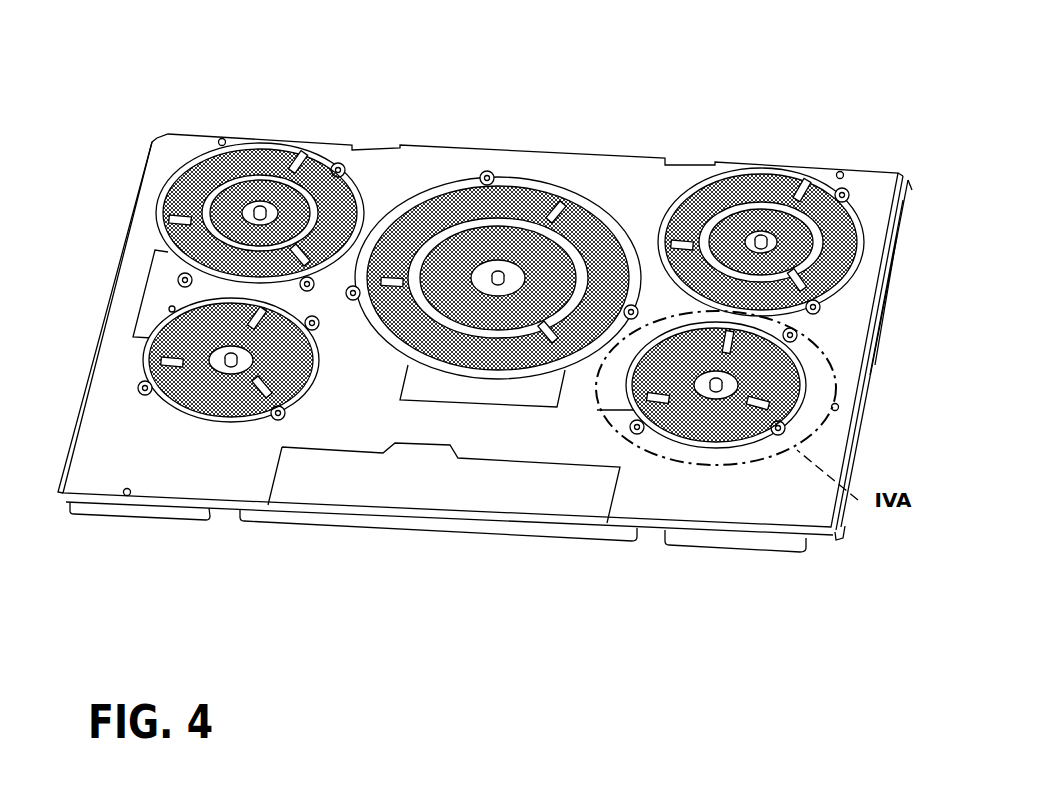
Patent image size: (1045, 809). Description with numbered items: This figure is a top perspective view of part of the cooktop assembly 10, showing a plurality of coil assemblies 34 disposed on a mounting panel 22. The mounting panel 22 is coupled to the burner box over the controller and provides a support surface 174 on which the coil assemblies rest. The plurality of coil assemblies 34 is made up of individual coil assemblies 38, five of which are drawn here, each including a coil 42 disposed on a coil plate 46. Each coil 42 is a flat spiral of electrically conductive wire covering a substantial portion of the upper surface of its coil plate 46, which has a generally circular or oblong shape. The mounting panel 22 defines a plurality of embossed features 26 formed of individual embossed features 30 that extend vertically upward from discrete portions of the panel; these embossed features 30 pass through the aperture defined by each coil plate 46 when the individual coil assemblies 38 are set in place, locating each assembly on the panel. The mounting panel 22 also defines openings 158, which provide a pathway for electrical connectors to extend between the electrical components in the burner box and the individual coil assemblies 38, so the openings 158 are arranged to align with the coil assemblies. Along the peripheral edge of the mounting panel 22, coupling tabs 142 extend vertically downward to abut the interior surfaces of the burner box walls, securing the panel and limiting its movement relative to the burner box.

The cooktop assembly 10 is at (491, 332).
The mounting panel 22 is at (852, 460).
The plurality of embossed features 26 is at (509, 165).
The individual embossed features 30 is at (361, 168).
The plurality of coil assemblies 34 is at (150, 128).
The individual coil assemblies 38 is at (433, 210).
The coil 42 is at (174, 380).
The coil plate 46 is at (148, 395).
The coupling tabs 142 is at (757, 542).
The openings 158 is at (650, 292).
The support surface 174 is at (850, 326).